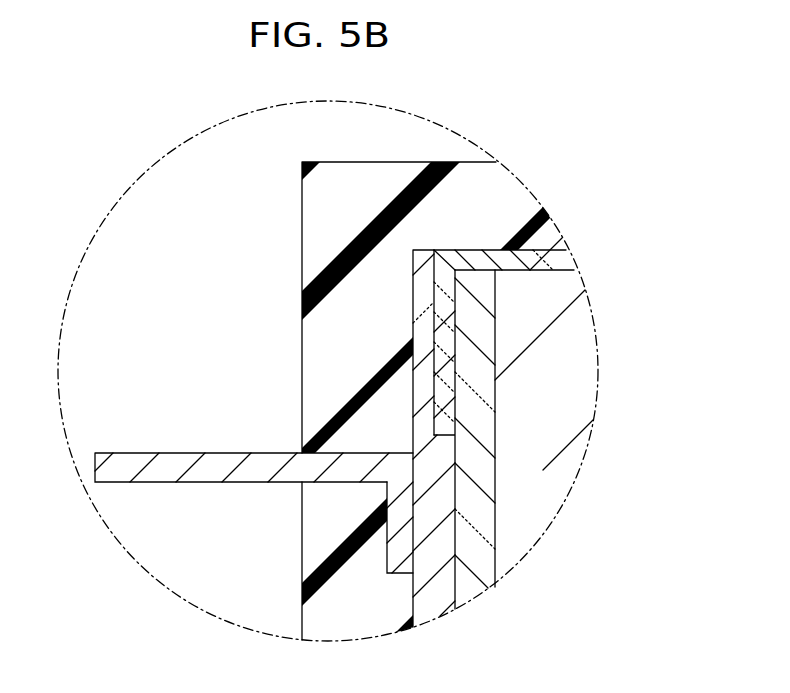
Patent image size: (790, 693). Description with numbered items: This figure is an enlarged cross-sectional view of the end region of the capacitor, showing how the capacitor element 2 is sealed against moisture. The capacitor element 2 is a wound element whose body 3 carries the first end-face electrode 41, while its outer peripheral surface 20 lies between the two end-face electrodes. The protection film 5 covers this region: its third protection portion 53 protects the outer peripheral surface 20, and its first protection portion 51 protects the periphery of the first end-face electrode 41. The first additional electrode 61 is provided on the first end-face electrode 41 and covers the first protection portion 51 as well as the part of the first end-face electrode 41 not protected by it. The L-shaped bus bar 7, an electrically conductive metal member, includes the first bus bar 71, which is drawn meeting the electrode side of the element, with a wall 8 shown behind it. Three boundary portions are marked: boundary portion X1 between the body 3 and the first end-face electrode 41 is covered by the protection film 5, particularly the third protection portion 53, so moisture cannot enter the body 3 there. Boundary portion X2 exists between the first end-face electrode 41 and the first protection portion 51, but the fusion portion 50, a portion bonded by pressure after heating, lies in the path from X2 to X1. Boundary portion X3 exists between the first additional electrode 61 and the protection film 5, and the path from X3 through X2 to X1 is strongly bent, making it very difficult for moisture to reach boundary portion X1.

The wall (casing) 8 is at (358, 178).
The bus bar 7 is at (254, 513).
The first bus bar 71 is at (258, 472).
The protection film 5 is at (472, 413).
The first additional electrode 61 is at (413, 273).
The first protection portion 51 is at (447, 307).
The fusion portion 50 is at (455, 401).
The third protection portion 53 is at (474, 255).
The first end-face electrode 41 is at (478, 405).
The outer peripheral surface 20 is at (534, 248).
The capacitor element 2 is at (569, 339).
The body 3 is at (565, 387).
The boundary portion X1 is at (498, 272).
The boundary portion X2 is at (434, 435).
The boundary portion X3 is at (434, 250).